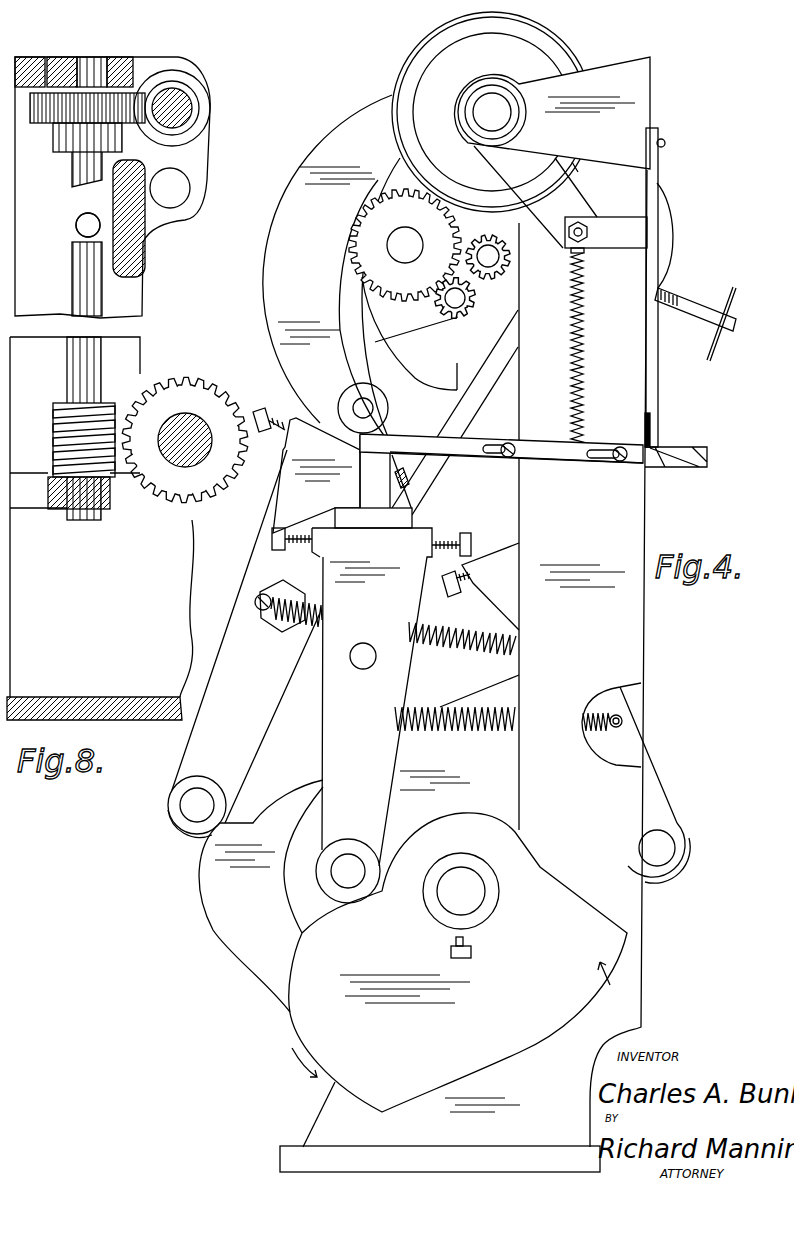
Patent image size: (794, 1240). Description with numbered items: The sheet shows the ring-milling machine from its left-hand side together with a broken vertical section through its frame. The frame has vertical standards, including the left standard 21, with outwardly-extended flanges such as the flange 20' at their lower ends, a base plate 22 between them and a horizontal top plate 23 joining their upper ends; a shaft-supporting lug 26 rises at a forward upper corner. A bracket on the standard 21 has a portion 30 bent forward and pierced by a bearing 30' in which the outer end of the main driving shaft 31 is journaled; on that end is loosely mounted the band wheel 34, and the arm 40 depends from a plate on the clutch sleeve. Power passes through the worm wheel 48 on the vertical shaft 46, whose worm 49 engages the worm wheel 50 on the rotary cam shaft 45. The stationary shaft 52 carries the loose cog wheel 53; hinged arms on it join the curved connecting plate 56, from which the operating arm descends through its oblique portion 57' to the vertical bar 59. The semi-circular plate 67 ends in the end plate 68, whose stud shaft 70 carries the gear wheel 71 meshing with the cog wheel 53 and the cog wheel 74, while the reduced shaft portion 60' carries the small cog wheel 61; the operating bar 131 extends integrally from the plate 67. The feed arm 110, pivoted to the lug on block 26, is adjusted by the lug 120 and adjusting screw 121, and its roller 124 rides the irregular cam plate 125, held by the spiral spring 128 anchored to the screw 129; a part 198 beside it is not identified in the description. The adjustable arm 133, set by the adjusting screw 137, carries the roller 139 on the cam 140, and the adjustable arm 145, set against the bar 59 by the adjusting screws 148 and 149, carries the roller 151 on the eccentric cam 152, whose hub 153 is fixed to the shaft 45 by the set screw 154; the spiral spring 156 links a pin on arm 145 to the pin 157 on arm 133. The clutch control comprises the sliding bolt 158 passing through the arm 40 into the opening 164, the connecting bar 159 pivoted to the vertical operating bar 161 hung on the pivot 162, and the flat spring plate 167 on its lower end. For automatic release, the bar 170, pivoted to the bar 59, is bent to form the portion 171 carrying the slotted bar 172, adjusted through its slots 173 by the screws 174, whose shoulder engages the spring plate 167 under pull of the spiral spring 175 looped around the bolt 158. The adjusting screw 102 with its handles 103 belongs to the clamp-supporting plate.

In FIG. 4, the curved arm 110 is at (300, 184).
In FIG. 4, the band wheel 34 is at (436, 34).
In FIG. 4, the outer portion of bracket 30 is at (552, 98).
In FIG. 4, the shaft opening or bearing 30' is at (536, 77).
In FIG. 8, the shaft opening or bearing 30' is at (198, 108).
In FIG. 4, the main driving rotary shaft 31 is at (495, 108).
In FIG. 8, the main driving rotary shaft 31 is at (190, 101).
In FIG. 4, the arm 40 is at (580, 201).
In FIG. 4, the sliding bolt 158 is at (576, 224).
In FIG. 8, the sliding bolt 158 is at (78, 220).
In FIG. 4, the connecting bar 159 is at (627, 250).
In FIG. 4, the spiral spring 175 is at (580, 390).
In FIG. 4, the vertical operating bar 161 is at (660, 182).
In FIG. 4, the pivot 162 is at (665, 146).
In FIG. 4, the flat spring plate 167 is at (652, 436).
In FIG. 4, the adjusting screw 102 is at (690, 293).
In FIG. 4, the handles 103 is at (734, 288).
In FIG. 4, the side plate or standard 21 is at (628, 530).
In FIG. 8, the side plate or standard 21 is at (128, 292).
In FIG. 4, the stud shaft 70 is at (393, 252).
In FIG. 4, the gear wheel 71 is at (362, 275).
In FIG. 4, the semi-circular plate or casting 67 is at (403, 361).
In FIG. 4, the end plate 68 is at (422, 328).
In FIG. 4, the cogwheel 53 is at (490, 223).
In FIG. 4, the reduced shaft portion 60' is at (507, 256).
In FIG. 4, the small cog-wheel 61 is at (506, 263).
In FIG. 4, the cog-wheel 74 is at (470, 311).
In FIG. 4, the operating bar or arm 131 is at (383, 408).
In FIG. 4, the oblique portion of operating arm 57' is at (455, 412).
In FIG. 4, the forwardly-extended lug 120 is at (285, 436).
In FIG. 4, the adjusting screw 121 is at (271, 407).
In FIG. 4, the bar 170 is at (375, 471).
In FIG. 4, the bent portion of bar 171 is at (501, 448).
In FIG. 4, the straight bar 172 is at (550, 463).
In FIG. 4, the slots 173 is at (494, 455).
In FIG. 4, the screws 174 is at (511, 445).
In FIG. 4, the vertical bar 59 is at (355, 519).
In FIG. 4, the adjustable arm or plate 145 is at (338, 717).
In FIG. 4, the adjusting screw 148 is at (272, 539).
In FIG. 4, the adjusting screw 149 is at (472, 547).
In FIG. 4, the adjusting screw 137 is at (458, 593).
In FIG. 4, the cam 140 is at (459, 666).
In FIG. 4, the spiral spring 156 is at (503, 708).
In FIG. 4, the screw 129 is at (256, 598).
In FIG. 4, the nut 198 is at (248, 630).
In FIG. 4, the spiral spring 128 is at (313, 620).
In FIG. 4, the anti-friction roller 124 is at (168, 812).
In FIG. 4, the irregular cam plate 125 is at (213, 893).
In FIG. 4, the anti-friction roller 151 is at (332, 895).
In FIG. 4, the cam 152 is at (307, 1037).
In FIG. 4, the hub 153 is at (492, 882).
In FIG. 4, the rotary cam shaft 45 is at (458, 882).
In FIG. 8, the rotary cam shaft 45 is at (178, 464).
In FIG. 4, the set screw 154 is at (473, 953).
In FIG. 4, the screw or pin 157 is at (623, 719).
In FIG. 4, the adjustable plate or arm 133 is at (640, 757).
In FIG. 4, the anti-friction roller 139 is at (688, 842).
In FIG. 4, the outwardly-extended flange 20' is at (429, 1148).
In FIG. 8, the horizontal top member or plate 23 is at (120, 57).
In FIG. 8, the worm wheel 48 is at (42, 100).
In FIG. 8, the vertical rotary shaft 46 is at (78, 262).
In FIG. 8, the shaft-supporting block or lug 26 is at (196, 153).
In FIG. 8, the stationary shaft 52 is at (180, 194).
In FIG. 8, the outwardly-curved connecting plate 56 is at (146, 240).
In FIG. 8, the opening 164 is at (77, 228).
In FIG. 8, the worm wheel 50 is at (157, 390).
In FIG. 8, the worm 49 is at (62, 408).
In FIG. 8, the base plate 22 is at (85, 710).